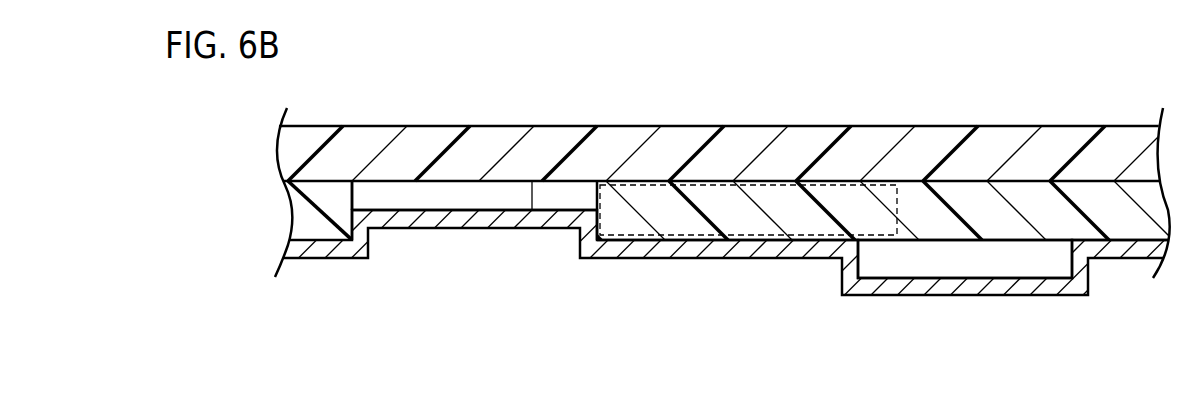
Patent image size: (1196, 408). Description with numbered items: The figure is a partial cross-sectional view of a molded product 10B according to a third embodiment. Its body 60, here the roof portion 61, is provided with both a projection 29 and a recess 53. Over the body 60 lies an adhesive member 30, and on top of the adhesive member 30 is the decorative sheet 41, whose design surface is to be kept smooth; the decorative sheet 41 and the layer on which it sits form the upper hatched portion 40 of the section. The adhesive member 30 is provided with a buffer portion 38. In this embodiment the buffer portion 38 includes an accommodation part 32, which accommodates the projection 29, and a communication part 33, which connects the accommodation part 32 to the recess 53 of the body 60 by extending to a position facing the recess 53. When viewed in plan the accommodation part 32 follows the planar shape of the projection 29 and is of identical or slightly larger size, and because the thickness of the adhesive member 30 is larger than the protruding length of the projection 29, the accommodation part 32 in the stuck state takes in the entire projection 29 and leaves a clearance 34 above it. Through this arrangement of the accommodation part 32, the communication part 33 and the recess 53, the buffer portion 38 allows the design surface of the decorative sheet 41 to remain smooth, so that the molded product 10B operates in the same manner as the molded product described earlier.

The molded product 10B is at (392, 57).
The projection 29 is at (533, 200).
The adhesive member 30 is at (270, 200).
The accommodation part 32 is at (353, 196).
The communication part 33 is at (669, 213).
The clearance 34 is at (483, 200).
The buffer portion 38 is at (624, 193).
The substrate 40 is at (678, 123).
The decorative sheet 41 is at (737, 145).
The recess 53 is at (930, 268).
The body 60 is at (270, 248).
The roof portion 61 is at (328, 252).